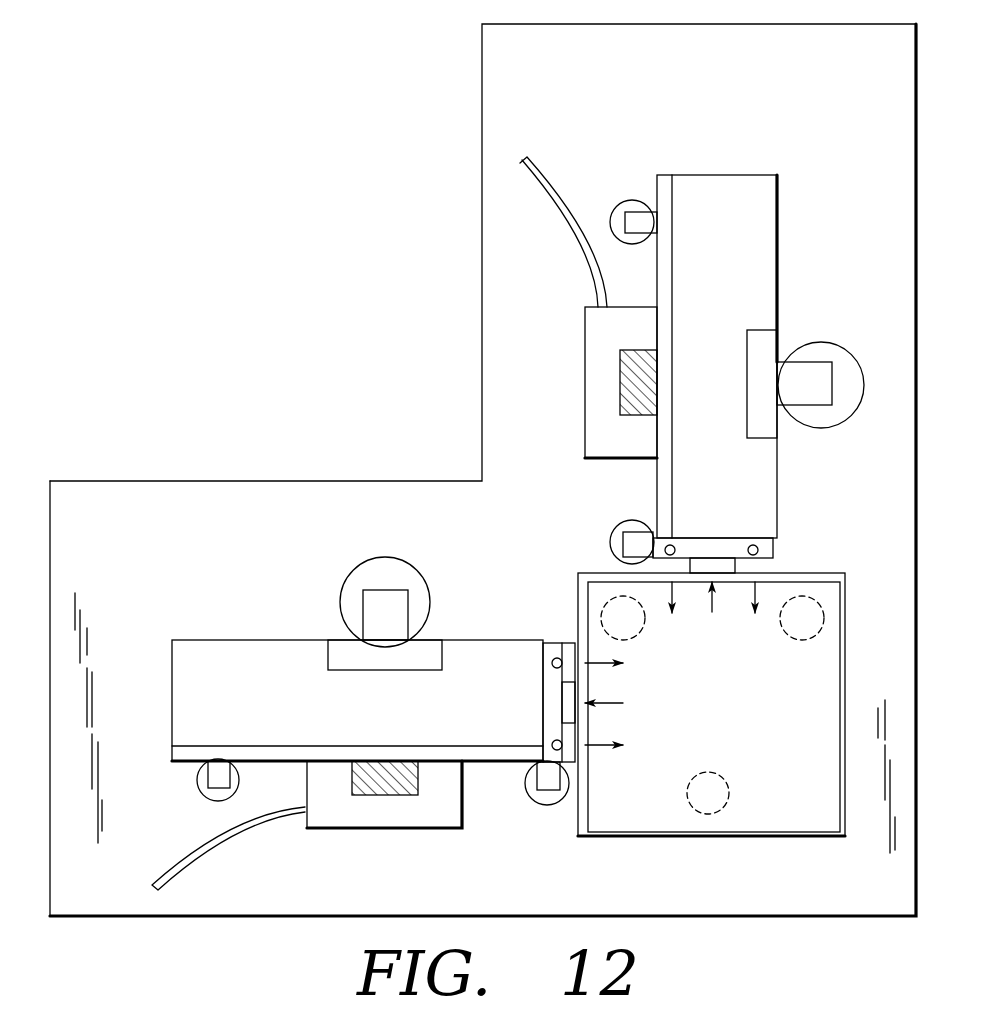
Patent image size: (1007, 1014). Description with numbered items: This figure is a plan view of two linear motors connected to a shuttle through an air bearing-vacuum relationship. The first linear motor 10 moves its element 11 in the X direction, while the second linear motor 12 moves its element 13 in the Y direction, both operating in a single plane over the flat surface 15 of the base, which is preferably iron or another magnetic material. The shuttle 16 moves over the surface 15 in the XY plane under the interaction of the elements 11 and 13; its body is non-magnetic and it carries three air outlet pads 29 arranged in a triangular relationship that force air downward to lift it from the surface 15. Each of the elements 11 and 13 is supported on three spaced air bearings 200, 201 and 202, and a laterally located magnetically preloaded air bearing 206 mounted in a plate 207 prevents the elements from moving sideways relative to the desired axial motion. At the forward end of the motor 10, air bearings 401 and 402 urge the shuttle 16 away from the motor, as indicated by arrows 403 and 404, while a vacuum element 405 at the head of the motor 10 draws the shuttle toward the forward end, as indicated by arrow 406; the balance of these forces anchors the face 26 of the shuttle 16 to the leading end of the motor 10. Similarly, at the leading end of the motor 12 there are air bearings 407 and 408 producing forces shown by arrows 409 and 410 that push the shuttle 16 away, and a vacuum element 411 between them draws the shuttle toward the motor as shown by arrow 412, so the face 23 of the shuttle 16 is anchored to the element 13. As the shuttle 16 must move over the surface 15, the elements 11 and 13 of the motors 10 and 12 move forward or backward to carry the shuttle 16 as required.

The flat surface 15 is at (888, 87).
The second linear motor 12 is at (786, 208).
The air bearing 201 is at (630, 202).
The air bearing 200 is at (820, 343).
The plate 207 is at (585, 335).
The magnetically preloaded air bearing 206 is at (618, 393).
The air bearing 202 is at (627, 521).
The element 13 is at (775, 542).
The air bearing 407 is at (775, 567).
The air bearing 408 is at (612, 548).
The vacuum element 411 is at (712, 558).
The shuttle 16 is at (818, 801).
The face 23 is at (578, 574).
The face 26 is at (573, 822).
The first linear motor 10 is at (217, 634).
The element 11 is at (540, 653).
The air bearing 402 is at (570, 643).
The vacuum element 405 is at (562, 700).
The arrow 404 is at (617, 667).
The arrow 406 is at (622, 705).
The arrow 403 is at (610, 752).
The arrow 410 is at (673, 622).
The arrow 412 is at (713, 612).
The arrow 409 is at (762, 618).
The air outlet pad 29 is at (730, 790).
The air bearing 401 is at (565, 797).